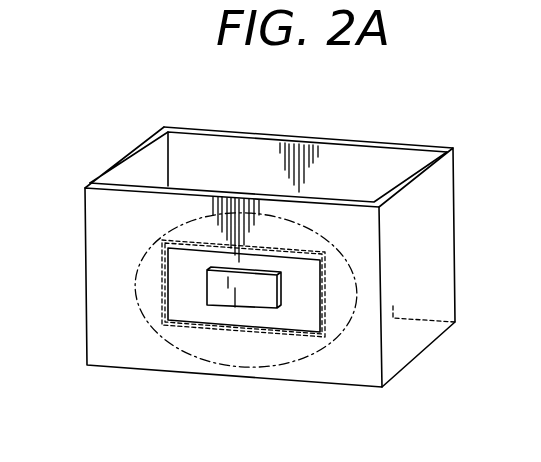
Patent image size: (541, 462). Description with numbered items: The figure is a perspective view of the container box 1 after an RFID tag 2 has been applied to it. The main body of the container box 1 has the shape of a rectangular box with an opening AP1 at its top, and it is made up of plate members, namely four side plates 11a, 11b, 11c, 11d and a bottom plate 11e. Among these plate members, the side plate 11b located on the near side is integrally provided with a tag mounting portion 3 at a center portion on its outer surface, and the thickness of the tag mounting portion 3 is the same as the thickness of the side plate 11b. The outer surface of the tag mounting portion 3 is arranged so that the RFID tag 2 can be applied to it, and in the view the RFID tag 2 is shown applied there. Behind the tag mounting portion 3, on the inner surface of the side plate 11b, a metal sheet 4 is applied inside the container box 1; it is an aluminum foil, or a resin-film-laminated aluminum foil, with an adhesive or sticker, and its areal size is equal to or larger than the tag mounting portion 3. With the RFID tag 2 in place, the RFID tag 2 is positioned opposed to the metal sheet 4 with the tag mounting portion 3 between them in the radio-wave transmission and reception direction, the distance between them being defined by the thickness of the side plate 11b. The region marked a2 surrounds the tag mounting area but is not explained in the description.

The container box 1 is at (272, 243).
The side plate 11a is at (435, 200).
The side plate 11b is at (110, 333).
The side plate 11c is at (130, 153).
The side plate 11d is at (268, 134).
The bottom plate 11e is at (405, 348).
The opening AP1 is at (392, 162).
The RFID tag 2 is at (258, 298).
The tag mounting portion 3 is at (208, 323).
The metal sheet 4 is at (305, 337).
The region a2 is at (162, 340).